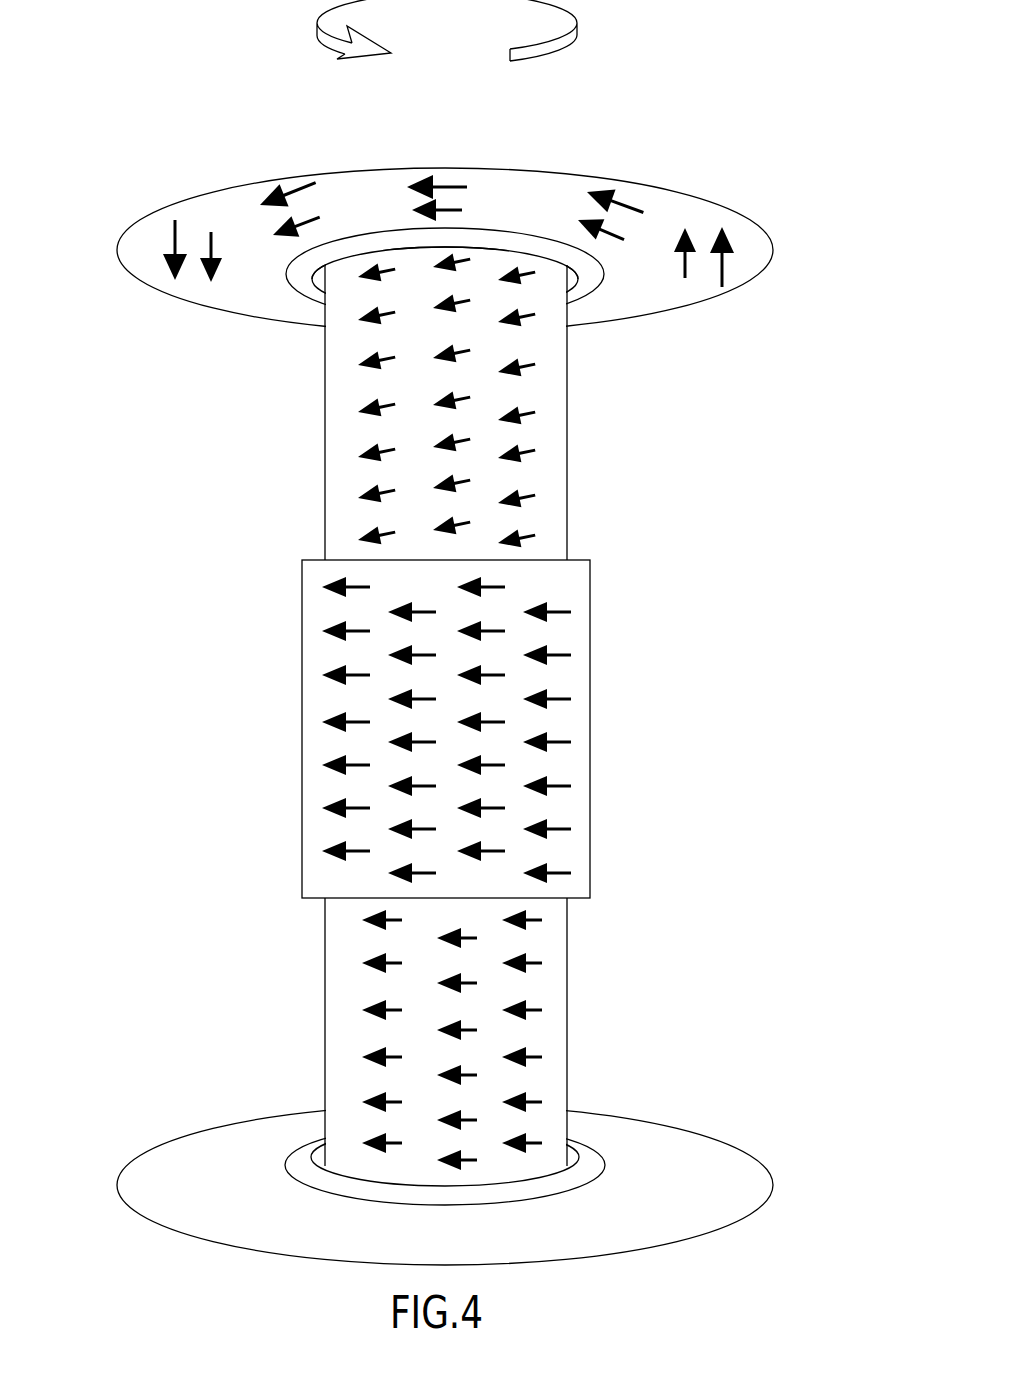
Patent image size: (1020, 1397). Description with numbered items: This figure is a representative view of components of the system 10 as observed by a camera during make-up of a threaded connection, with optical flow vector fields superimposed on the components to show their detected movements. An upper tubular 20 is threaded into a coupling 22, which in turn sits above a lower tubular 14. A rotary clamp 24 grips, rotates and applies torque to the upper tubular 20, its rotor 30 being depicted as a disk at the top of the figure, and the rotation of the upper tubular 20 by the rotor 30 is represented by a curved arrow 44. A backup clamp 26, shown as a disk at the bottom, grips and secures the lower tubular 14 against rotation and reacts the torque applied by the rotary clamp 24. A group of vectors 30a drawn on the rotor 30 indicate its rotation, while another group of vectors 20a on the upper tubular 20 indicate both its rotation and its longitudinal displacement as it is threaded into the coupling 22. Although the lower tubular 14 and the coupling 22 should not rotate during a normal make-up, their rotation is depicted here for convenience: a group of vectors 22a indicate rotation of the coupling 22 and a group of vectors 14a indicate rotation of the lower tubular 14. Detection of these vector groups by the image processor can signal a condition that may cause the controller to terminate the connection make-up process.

The system 10 is at (832, 146).
The lower tubular 14 is at (325, 1040).
The vectors 14a is at (395, 921).
The upper tubular 20 is at (325, 500).
The vectors 20a is at (383, 363).
The coupling 22 is at (302, 795).
The vectors 22a is at (357, 590).
The rotary clamp 24 is at (185, 308).
The backup clamp 26 is at (742, 1158).
The rotor 30 is at (675, 297).
The vectors 30a is at (293, 195).
The arrow 44 is at (318, 0).